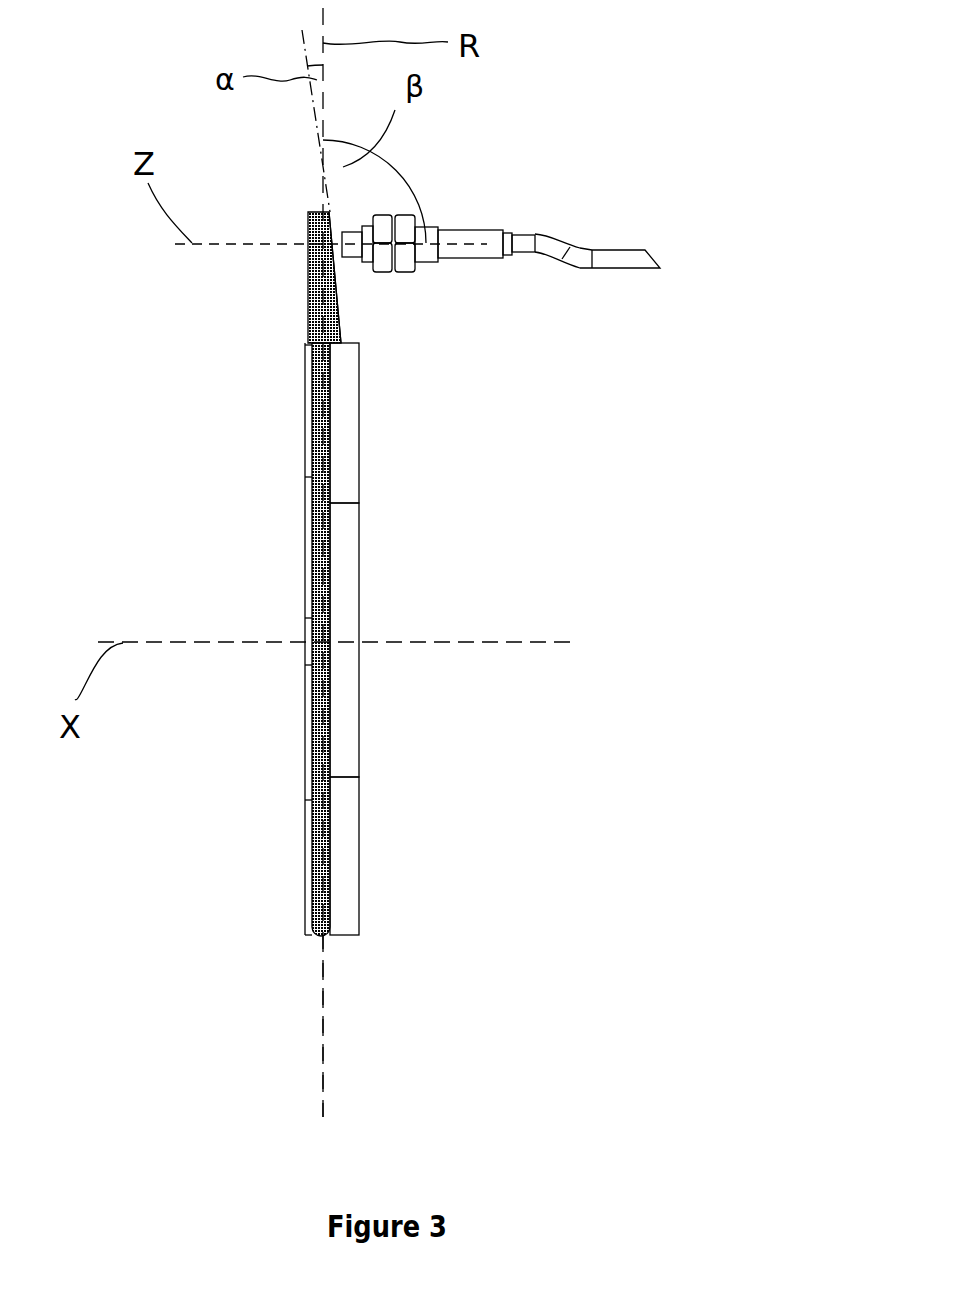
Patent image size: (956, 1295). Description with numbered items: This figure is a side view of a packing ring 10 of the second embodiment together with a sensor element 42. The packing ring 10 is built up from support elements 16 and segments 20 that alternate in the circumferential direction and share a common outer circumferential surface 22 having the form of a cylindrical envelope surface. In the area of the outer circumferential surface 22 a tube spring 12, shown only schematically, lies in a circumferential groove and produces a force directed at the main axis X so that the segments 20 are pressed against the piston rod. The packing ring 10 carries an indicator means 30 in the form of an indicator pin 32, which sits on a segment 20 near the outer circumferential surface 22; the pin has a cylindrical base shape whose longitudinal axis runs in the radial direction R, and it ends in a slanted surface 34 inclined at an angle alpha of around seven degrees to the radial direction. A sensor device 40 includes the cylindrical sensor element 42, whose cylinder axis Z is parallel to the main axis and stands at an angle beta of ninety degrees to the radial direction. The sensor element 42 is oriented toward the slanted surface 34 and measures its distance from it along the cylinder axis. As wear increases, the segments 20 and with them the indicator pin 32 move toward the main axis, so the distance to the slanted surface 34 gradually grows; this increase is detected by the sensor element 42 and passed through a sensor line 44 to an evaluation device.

The packing ring 10 is at (391, 739).
The tube spring 12 is at (332, 533).
The support element 16 is at (350, 440).
The segment 20 is at (343, 682).
The outer circumferential surface 22 is at (343, 937).
The indicator means 30 is at (266, 321).
The indicator pin 32 is at (310, 285).
The slanted surface 34 is at (343, 287).
The sensor device 40 is at (518, 203).
The sensor element 42 is at (488, 237).
The sensor line 44 is at (620, 257).